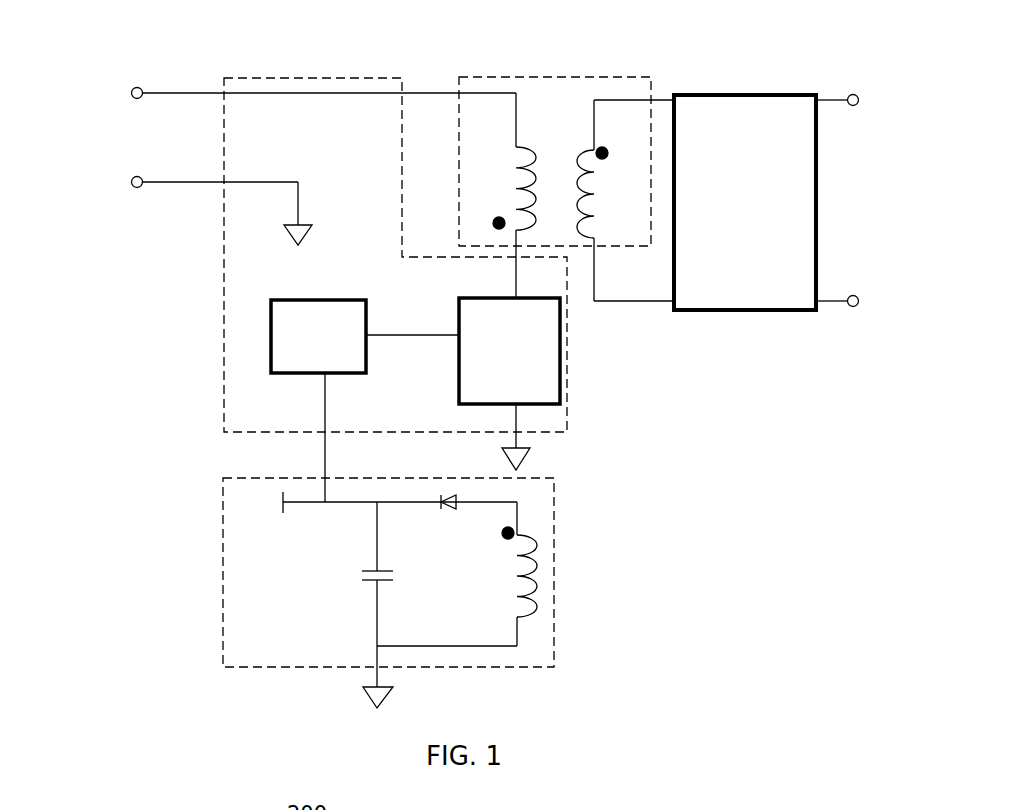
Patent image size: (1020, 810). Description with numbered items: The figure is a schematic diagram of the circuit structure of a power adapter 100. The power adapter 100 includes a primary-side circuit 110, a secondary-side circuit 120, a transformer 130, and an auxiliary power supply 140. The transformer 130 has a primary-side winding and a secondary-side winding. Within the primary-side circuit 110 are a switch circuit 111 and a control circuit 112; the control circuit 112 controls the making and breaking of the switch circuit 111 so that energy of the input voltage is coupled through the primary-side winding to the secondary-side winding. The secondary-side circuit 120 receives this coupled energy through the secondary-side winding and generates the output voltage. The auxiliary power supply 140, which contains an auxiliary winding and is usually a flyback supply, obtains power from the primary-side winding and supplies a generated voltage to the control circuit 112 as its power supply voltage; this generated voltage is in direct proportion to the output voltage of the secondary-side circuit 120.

The power adapter 100 is at (81, 51).
The primary-side circuit 110 is at (308, 77).
The switch circuit 111 is at (458, 306).
The control circuit 112 is at (320, 299).
The secondary-side circuit 120 is at (745, 93).
The transformer 130 is at (617, 76).
The auxiliary power supply 140 is at (556, 480).